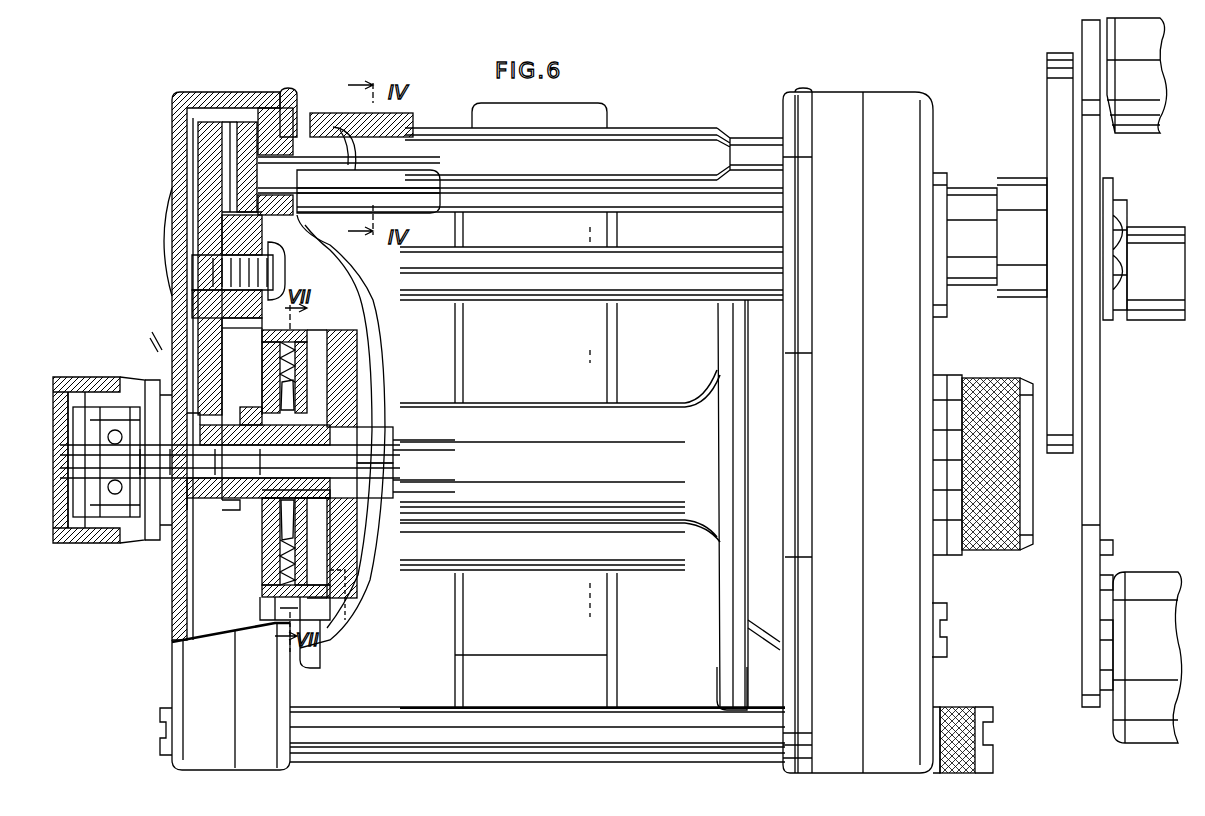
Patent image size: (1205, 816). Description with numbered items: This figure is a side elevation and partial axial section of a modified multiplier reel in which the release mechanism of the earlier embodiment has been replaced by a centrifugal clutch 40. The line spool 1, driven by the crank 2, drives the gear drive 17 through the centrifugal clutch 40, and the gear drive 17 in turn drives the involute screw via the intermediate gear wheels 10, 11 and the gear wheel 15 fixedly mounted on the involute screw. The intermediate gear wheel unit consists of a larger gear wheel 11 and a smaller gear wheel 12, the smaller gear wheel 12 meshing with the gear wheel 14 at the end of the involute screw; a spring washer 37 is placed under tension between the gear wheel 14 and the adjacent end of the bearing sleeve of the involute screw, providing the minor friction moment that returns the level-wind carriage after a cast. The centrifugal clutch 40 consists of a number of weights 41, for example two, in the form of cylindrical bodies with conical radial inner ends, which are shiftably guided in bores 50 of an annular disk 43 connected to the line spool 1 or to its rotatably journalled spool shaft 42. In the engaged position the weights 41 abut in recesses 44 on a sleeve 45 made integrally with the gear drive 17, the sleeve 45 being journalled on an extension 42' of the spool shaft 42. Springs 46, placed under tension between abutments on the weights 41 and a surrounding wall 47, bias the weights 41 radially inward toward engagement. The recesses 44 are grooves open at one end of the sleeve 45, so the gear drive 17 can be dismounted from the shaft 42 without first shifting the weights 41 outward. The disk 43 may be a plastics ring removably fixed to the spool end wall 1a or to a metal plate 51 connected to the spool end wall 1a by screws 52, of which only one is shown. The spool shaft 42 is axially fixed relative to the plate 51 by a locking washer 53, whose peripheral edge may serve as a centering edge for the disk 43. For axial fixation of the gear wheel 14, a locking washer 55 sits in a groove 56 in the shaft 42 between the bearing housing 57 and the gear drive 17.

The line spool 1 is at (528, 468).
The spool end wall 1a is at (368, 358).
The crank 2 is at (1090, 490).
The intermediate gear wheel 10 is at (186, 304).
The larger intermediate gear wheel 11 is at (210, 140).
The smaller intermediate gear wheel 12 is at (242, 328).
The gear wheel 14 is at (246, 122).
The gear wheel on involute screw 15 is at (200, 268).
The gear drive 17 is at (229, 510).
The spring washer 37 is at (288, 140).
The centrifugal clutch 40 is at (230, 452).
The centrifugal weights 41 is at (278, 385).
The spool shaft 42 is at (399, 447).
The spool shaft extension 42' is at (206, 475).
The annular disk 43 is at (260, 603).
The recesses 44 is at (399, 480).
The sleeve 45 is at (262, 512).
The springs 46 is at (275, 352).
The surrounding wall 47 is at (335, 612).
The bores 50 is at (262, 572).
The metal plate 51 is at (357, 368).
The screws 52 is at (352, 585).
The locking washer 53 is at (362, 397).
The locking washer 55 is at (160, 380).
The groove 56 is at (135, 462).
The bearing housing 57 is at (92, 378).